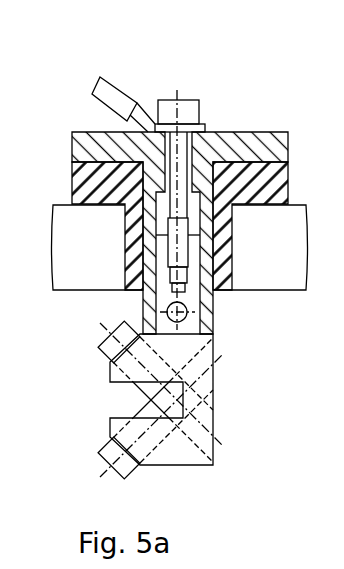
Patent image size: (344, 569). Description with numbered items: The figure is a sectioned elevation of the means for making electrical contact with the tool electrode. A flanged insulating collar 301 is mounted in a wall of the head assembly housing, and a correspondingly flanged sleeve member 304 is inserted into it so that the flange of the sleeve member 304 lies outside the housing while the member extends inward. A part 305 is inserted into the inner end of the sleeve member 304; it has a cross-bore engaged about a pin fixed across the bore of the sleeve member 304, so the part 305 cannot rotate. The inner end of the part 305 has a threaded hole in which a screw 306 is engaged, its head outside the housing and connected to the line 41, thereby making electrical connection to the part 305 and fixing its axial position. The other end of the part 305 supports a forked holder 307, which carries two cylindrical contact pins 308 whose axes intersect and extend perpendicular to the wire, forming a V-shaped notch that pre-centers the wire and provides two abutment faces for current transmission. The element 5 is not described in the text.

The shaft 5 is at (95, 277).
The line 41 is at (105, 93).
The flanged insulating collar 301 is at (93, 183).
The flanged sleeve member 304 is at (92, 145).
The part 305 is at (190, 300).
The screw 306 is at (183, 110).
The forked holder 307 is at (177, 453).
The cylindrical contact pins 308 is at (114, 348).